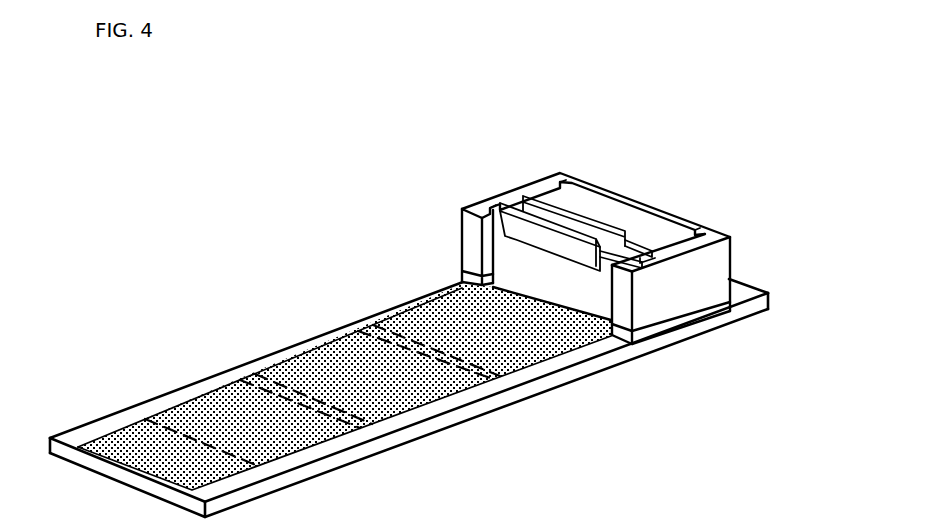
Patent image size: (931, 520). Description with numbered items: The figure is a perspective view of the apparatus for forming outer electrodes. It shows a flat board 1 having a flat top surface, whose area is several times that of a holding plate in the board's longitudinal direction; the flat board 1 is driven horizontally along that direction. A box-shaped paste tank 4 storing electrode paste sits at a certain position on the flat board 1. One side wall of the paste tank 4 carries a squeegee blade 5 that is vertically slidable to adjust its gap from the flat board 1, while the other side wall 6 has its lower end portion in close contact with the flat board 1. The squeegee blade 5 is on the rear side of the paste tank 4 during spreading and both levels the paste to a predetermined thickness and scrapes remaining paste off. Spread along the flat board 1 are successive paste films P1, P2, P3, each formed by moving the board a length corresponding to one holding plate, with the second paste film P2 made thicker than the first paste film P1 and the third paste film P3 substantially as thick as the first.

The flat board 1 is at (447, 425).
The paste tank 4 is at (682, 206).
The squeegee blade 5 is at (506, 257).
The other side wall 6 is at (528, 189).
The paste film P1 is at (215, 413).
The second paste film P2 is at (324, 362).
The third paste film P3 is at (437, 327).